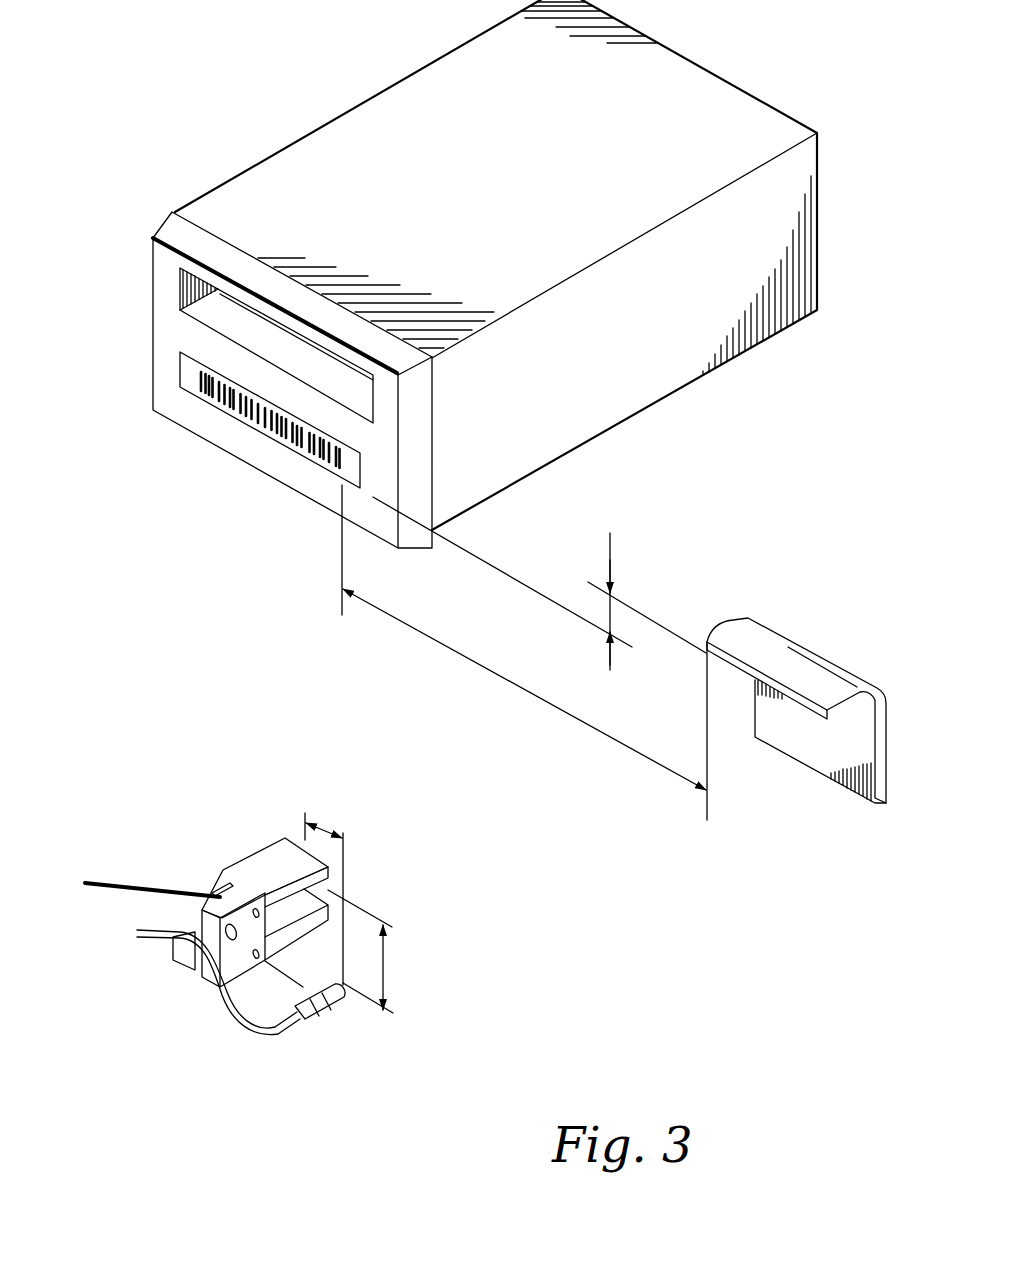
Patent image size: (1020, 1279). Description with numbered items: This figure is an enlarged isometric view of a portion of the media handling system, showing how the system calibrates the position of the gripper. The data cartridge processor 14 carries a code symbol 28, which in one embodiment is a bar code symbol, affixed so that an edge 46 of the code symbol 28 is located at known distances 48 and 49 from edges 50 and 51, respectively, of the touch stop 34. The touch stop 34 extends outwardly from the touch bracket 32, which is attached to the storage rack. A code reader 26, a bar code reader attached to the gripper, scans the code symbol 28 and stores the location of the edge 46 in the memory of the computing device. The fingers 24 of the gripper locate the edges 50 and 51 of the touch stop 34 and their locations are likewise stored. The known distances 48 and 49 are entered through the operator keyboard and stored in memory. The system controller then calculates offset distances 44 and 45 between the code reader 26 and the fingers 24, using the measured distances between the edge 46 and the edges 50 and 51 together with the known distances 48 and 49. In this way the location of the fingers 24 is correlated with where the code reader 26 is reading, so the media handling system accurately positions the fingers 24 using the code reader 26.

The data cartridge processor 14 is at (387, 113).
The code symbol 28 is at (190, 382).
The edge 46 is at (340, 463).
The distance 48 is at (548, 706).
The distance 49 is at (608, 552).
The edge 50 is at (704, 640).
The edge 51 is at (740, 641).
The touch bracket 32 is at (839, 726).
The touch stop 34 is at (797, 710).
The fingers 24 is at (253, 855).
The code reader 26 is at (322, 1010).
The offset distance 44 is at (325, 828).
The offset distance 45 is at (385, 963).